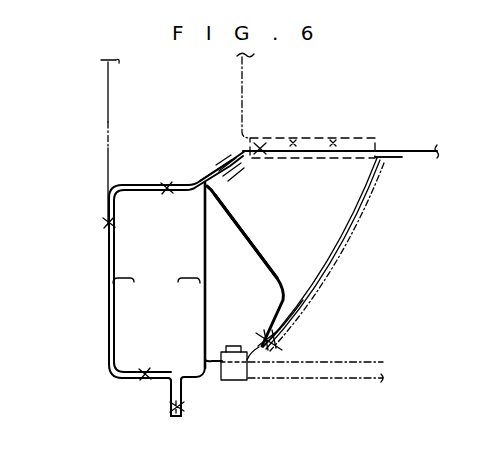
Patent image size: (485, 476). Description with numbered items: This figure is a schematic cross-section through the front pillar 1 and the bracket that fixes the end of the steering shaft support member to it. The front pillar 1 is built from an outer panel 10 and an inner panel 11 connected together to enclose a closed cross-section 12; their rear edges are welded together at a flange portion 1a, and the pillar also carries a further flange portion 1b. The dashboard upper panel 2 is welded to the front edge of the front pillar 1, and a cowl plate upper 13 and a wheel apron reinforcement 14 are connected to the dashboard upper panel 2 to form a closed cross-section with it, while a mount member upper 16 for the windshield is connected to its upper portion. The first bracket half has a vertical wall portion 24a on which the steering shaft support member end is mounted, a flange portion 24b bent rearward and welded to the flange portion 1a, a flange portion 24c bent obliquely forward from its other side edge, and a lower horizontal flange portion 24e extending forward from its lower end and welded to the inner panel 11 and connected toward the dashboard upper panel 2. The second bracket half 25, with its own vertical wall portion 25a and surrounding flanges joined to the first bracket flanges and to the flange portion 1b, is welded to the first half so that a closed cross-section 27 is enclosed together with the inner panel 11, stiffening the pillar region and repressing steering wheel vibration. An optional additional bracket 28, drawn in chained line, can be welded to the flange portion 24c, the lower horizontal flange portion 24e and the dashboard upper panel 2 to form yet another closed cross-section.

The front pillar 1 is at (188, 310).
The flange portion 1a is at (168, 394).
The flange portion 1b is at (207, 172).
The dashboard upper panel 2 is at (417, 151).
The outer panel 10 is at (129, 321).
The inner panel 11 is at (185, 321).
The closed cross-section 12 is at (178, 251).
The cowl plate upper 13 is at (244, 97).
The wheel apron reinforcement 14 is at (107, 117).
The mount member upper 16 is at (215, 168).
The vertical wall portion 24a is at (234, 380).
The flange portion 24b is at (186, 393).
The flange portion 24c is at (283, 348).
The lower horizontal flange portion 24e is at (343, 214).
The second bracket half 25 is at (286, 276).
The vertical wall portion 25a is at (257, 252).
The closed cross-section 27 is at (247, 306).
The additional bracket 28 is at (303, 312).